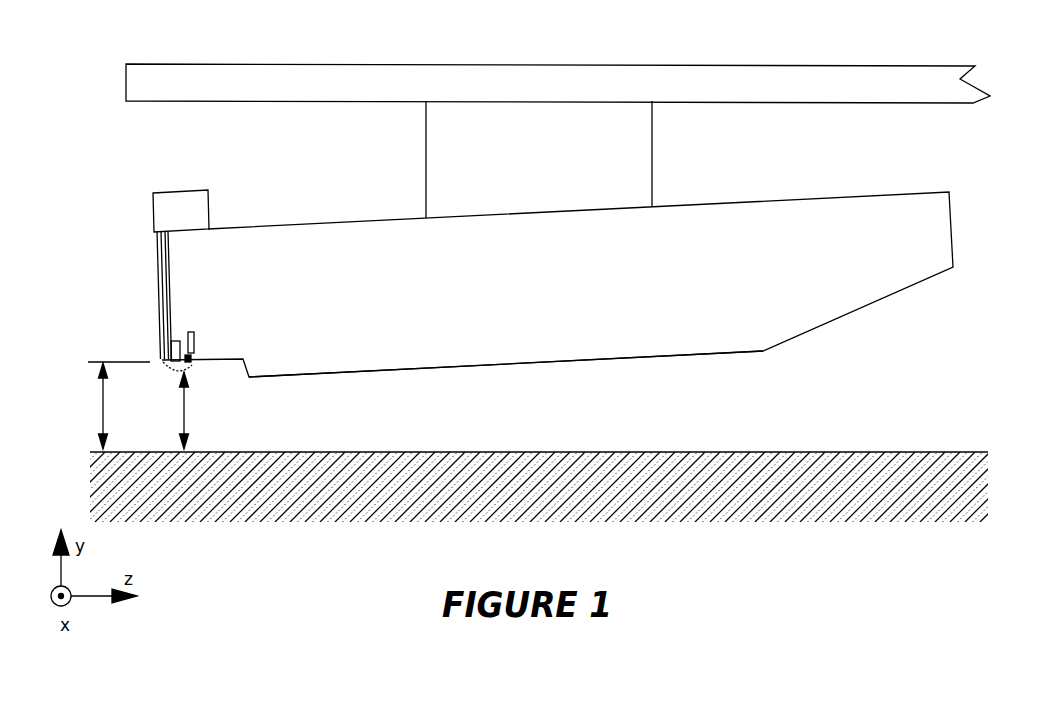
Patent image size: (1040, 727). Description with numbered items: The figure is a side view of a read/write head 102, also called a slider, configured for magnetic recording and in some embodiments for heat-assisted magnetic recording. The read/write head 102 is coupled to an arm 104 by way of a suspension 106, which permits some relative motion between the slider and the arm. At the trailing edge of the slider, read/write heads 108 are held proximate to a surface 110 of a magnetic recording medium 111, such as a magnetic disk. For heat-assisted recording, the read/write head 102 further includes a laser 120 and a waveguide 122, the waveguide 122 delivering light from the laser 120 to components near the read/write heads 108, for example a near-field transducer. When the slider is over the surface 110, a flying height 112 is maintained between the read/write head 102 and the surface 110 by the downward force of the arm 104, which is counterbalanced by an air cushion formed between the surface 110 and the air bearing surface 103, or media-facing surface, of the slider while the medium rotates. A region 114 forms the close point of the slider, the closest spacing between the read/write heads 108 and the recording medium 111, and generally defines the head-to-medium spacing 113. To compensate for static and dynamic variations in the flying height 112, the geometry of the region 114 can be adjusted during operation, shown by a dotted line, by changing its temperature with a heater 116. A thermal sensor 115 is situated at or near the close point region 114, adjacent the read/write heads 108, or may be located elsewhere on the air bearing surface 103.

The read/write head 102 is at (817, 205).
The air bearing surface 103 is at (370, 373).
The arm 104 is at (882, 78).
The suspension 106 is at (652, 148).
The read/write heads 108 is at (173, 340).
The surface 110 is at (820, 452).
The magnetic recording medium 111 is at (840, 508).
The flying height 112 is at (100, 405).
The head-to-medium spacing 113 is at (162, 410).
The close point region 114 is at (190, 368).
The thermal sensor 115 is at (193, 357).
The heater 116 is at (192, 334).
The laser 120 is at (180, 203).
The waveguide 122 is at (160, 265).